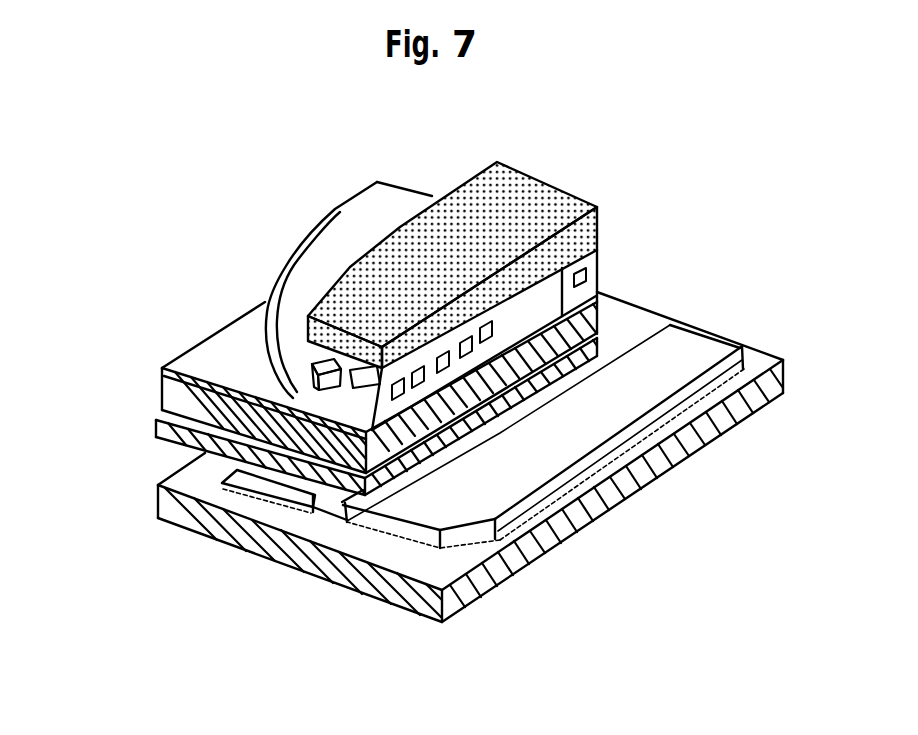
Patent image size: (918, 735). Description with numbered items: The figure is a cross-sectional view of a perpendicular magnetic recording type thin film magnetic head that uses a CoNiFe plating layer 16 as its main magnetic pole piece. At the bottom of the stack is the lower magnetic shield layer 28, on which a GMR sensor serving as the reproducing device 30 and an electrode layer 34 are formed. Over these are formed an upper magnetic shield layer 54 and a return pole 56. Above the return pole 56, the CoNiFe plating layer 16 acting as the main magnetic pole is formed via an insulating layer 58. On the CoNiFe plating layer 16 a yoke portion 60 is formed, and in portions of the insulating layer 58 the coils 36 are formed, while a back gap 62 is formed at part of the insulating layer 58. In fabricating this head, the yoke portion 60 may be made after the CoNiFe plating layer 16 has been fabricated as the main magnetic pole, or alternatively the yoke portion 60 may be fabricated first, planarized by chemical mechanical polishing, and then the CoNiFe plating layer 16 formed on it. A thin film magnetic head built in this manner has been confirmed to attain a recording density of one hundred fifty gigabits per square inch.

The CoNiFe plating layer 16 is at (283, 397).
The lower magnetic shield layer 28 is at (512, 562).
The reproducing device 30 is at (300, 522).
The electrode layer 34 is at (397, 530).
The coils 36 is at (505, 300).
The upper magnetic shield layer 54 is at (182, 437).
The return pole 56 is at (182, 400).
The insulating layer 58 is at (343, 215).
The yoke portion 60 is at (533, 181).
The back gap 62 is at (546, 297).